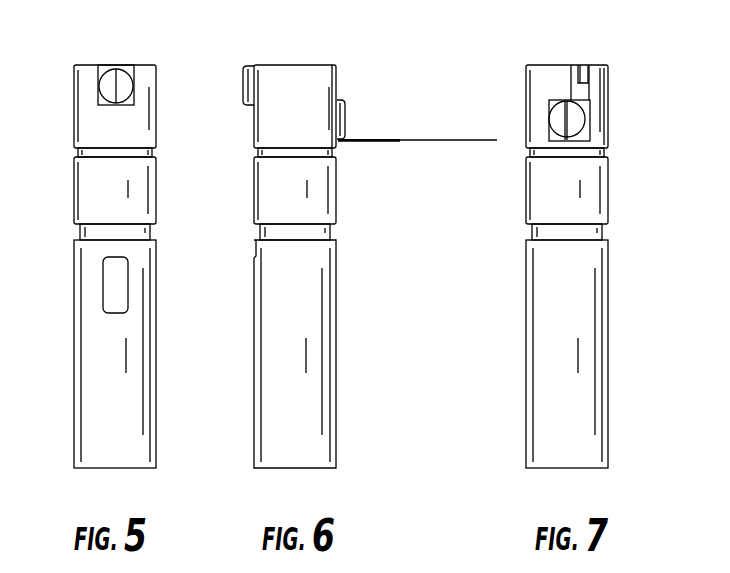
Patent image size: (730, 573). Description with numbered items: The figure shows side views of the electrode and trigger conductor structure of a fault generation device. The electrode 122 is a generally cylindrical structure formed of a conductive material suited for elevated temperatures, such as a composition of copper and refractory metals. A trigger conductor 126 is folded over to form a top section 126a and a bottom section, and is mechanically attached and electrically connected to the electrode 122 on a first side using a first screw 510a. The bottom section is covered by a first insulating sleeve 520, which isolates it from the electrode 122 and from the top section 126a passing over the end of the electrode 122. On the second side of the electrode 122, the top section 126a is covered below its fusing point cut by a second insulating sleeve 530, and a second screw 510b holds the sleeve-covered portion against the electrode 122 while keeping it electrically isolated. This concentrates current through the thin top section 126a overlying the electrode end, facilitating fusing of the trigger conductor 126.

In FIG. 5, the electrode 122 is at (128, 452).
In FIG. 6, the electrode 122 is at (298, 452).
In FIG. 7, the electrode 122 is at (580, 452).
In FIG. 6, the trigger conductor 126 is at (447, 139).
In FIG. 5, the top section 126a is at (117, 68).
In FIG. 7, the top section 126a is at (580, 68).
In FIG. 5, the first screw 510a is at (115, 84).
In FIG. 6, the first screw 510a is at (250, 87).
In FIG. 7, the first screw 510a is at (567, 82).
In FIG. 6, the second screw 510b is at (347, 126).
In FIG. 7, the second screw 510b is at (570, 118).
In FIG. 7, the first insulating sleeve 520 is at (588, 78).
In FIG. 6, the second insulating sleeve 530 is at (385, 143).
In FIG. 7, the second insulating sleeve 530 is at (590, 128).